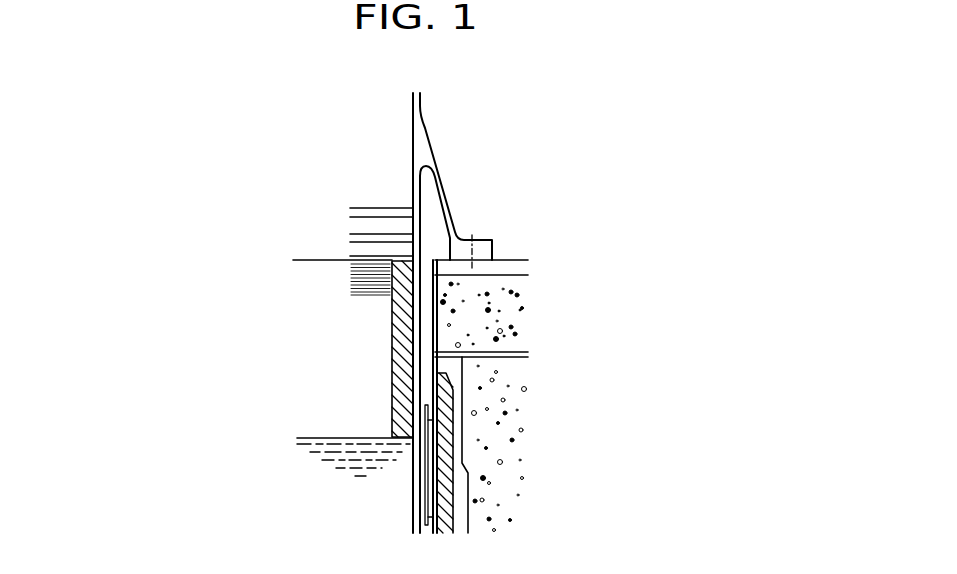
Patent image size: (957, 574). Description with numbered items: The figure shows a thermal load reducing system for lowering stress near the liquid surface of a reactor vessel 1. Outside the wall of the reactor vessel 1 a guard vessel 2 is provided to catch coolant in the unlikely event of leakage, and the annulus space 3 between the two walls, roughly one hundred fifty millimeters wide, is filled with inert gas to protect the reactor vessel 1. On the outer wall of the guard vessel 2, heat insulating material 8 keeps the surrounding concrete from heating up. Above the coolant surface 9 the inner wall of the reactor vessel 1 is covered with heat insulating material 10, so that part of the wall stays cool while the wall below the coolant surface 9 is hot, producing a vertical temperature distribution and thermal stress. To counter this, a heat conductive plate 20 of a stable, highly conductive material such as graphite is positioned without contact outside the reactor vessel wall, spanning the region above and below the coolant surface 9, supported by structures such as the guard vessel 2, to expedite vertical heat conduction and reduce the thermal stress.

The reactor vessel 1 is at (404, 479).
The guard vessel 2 is at (424, 498).
The annulus space 3 is at (428, 258).
The heat insulating material 8 is at (455, 418).
The coolant surface 9 is at (358, 438).
The heat insulating material 10 is at (384, 318).
The heat conductive plate 20 is at (413, 425).